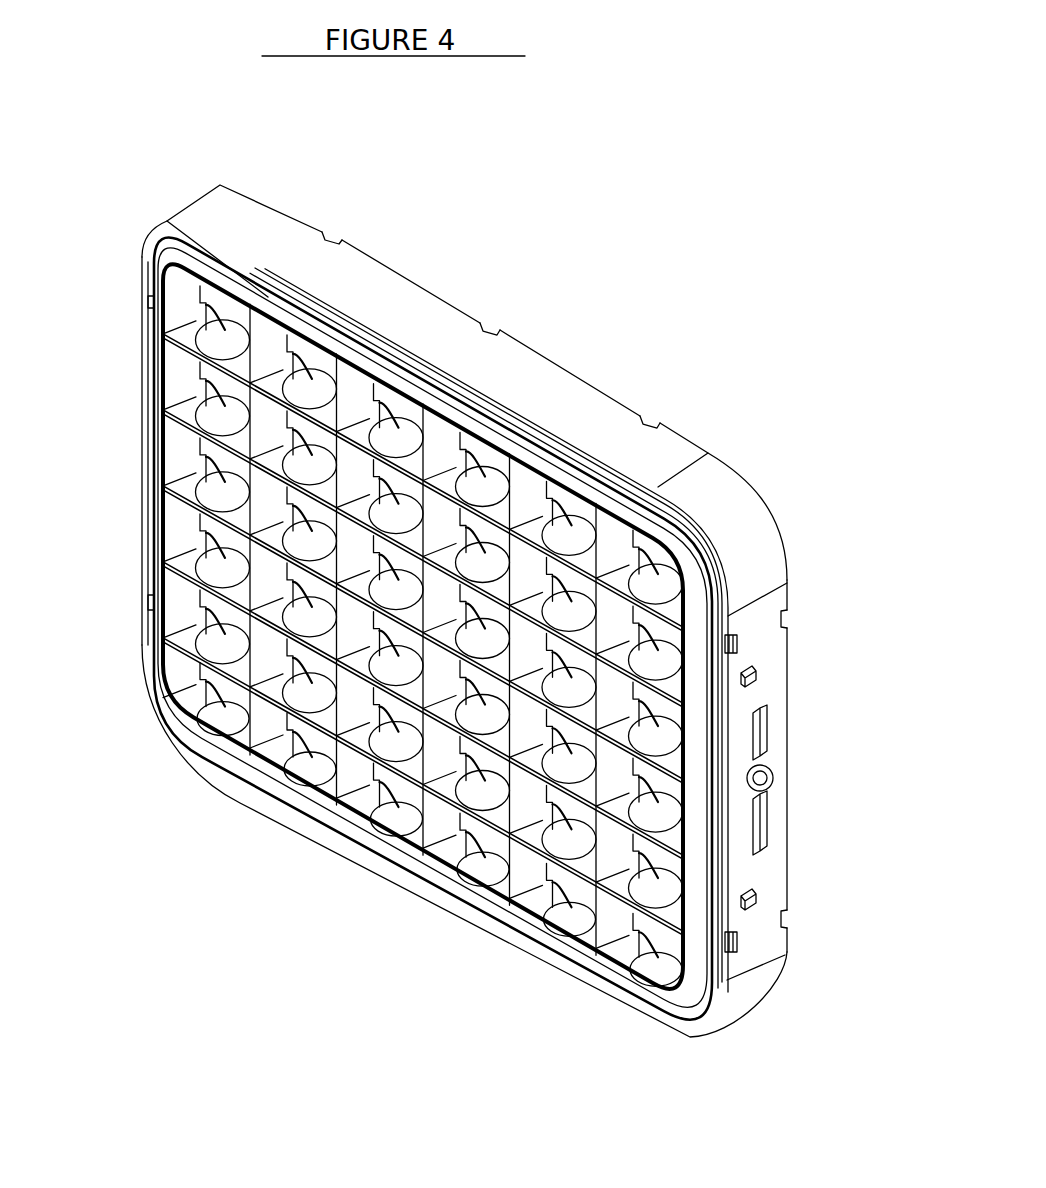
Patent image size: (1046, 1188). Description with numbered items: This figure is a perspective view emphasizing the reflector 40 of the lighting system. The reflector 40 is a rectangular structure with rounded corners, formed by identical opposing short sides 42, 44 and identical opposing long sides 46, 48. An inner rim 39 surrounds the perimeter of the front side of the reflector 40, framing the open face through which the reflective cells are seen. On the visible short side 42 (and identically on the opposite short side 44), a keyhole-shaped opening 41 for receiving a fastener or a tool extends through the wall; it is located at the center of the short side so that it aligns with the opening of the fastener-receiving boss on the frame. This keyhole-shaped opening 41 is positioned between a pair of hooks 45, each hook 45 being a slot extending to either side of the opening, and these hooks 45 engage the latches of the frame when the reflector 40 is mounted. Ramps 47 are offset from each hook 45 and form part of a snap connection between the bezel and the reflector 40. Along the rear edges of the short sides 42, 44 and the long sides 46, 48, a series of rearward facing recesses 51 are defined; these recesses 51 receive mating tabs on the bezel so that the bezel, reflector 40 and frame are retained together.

The inner rim 39 is at (164, 270).
The reflector 40 is at (568, 252).
The keyhole-shaped opening 41 is at (774, 778).
The short side 42 is at (773, 873).
The short side 44 is at (140, 483).
The hook 45 is at (762, 722).
The long side 46 is at (369, 298).
The ramp 47 is at (756, 675).
The long side 48 is at (388, 857).
The rearward facing recess 51 is at (325, 232).